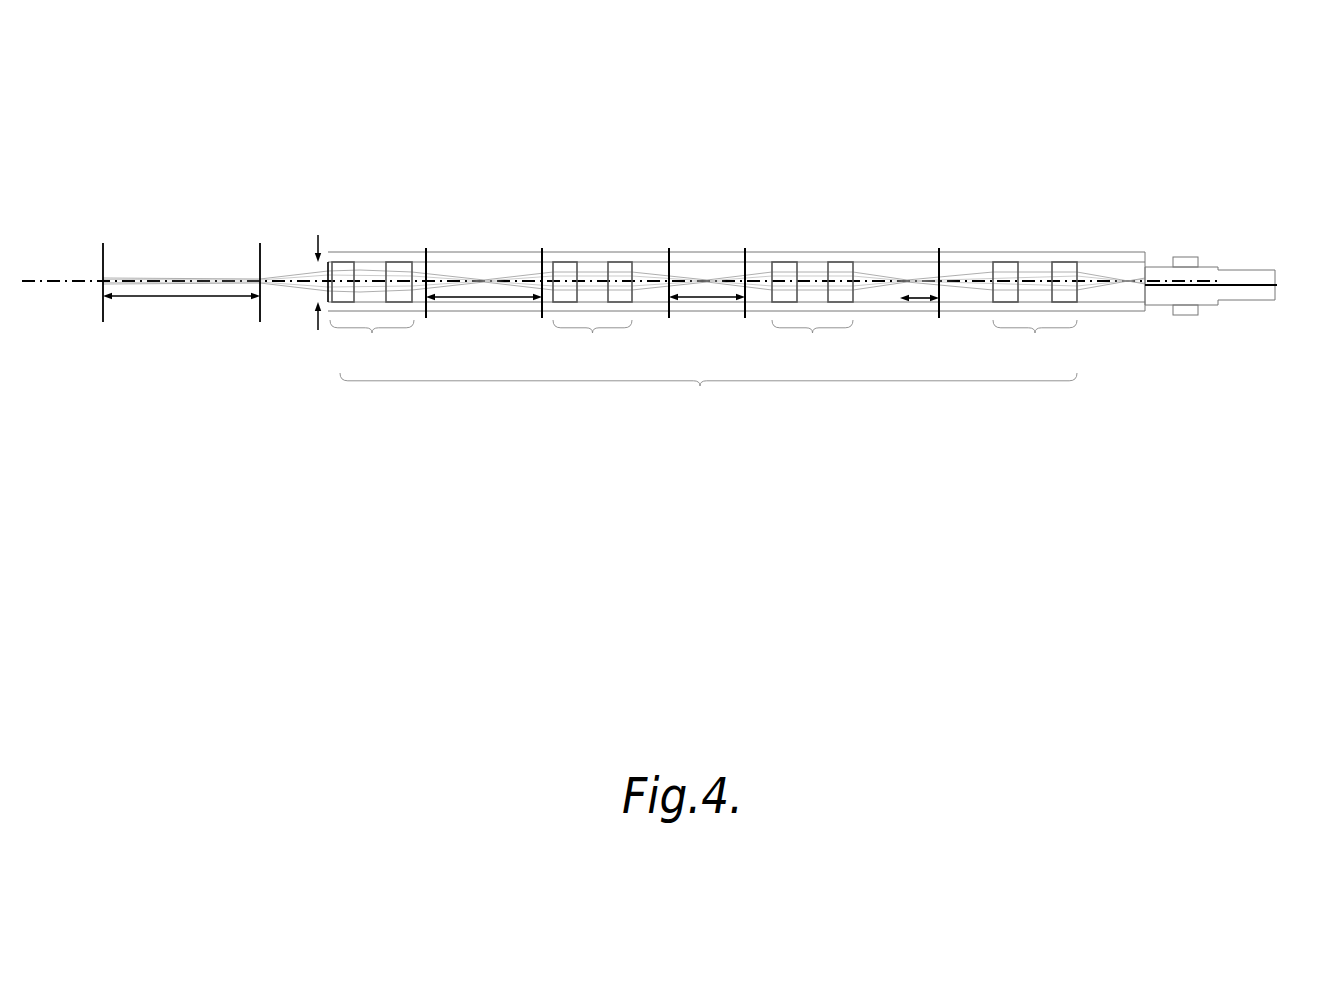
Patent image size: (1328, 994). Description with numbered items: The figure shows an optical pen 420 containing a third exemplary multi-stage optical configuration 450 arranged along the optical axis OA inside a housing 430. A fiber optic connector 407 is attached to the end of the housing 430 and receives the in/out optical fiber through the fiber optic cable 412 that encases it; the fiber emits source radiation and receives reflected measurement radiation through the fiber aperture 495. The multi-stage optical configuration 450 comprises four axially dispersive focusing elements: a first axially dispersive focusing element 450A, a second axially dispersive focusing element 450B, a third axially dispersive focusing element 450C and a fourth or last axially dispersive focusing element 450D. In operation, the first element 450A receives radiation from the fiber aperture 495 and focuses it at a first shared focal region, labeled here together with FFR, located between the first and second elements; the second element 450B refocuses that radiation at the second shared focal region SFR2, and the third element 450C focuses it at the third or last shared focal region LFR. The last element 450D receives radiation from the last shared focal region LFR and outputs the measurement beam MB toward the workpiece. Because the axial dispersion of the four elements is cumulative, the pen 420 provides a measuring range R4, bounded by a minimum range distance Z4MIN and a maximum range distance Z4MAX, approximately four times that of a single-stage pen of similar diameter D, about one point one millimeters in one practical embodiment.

The optical pen 420 is at (1157, 113).
The fiber aperture 495 is at (1143, 282).
The fiber optic connector 407 is at (1248, 270).
The fiber optic cable 412 is at (1280, 288).
The housing 430 is at (1126, 314).
The multi-stage optical configuration 450 is at (708, 398).
The first axially dispersive focusing element 450A is at (1035, 315).
The second axially dispersive focusing element 450B is at (812, 315).
The third axially dispersive focusing element 450C is at (592, 315).
The fourth or last axially dispersive focusing element 450D is at (372, 315).
The measuring range R4 is at (182, 298).
The housing diameter D is at (318, 330).
The measurement beam MB is at (275, 272).
The optical axis OA is at (1098, 280).
The maximum range distance Z4MAX is at (129, 234).
The minimum range distance Z4MIN is at (258, 258).
The last shared focal region LFR is at (490, 296).
The second shared focal region SFR2 is at (712, 296).
The fiber free region FFR is at (918, 296).